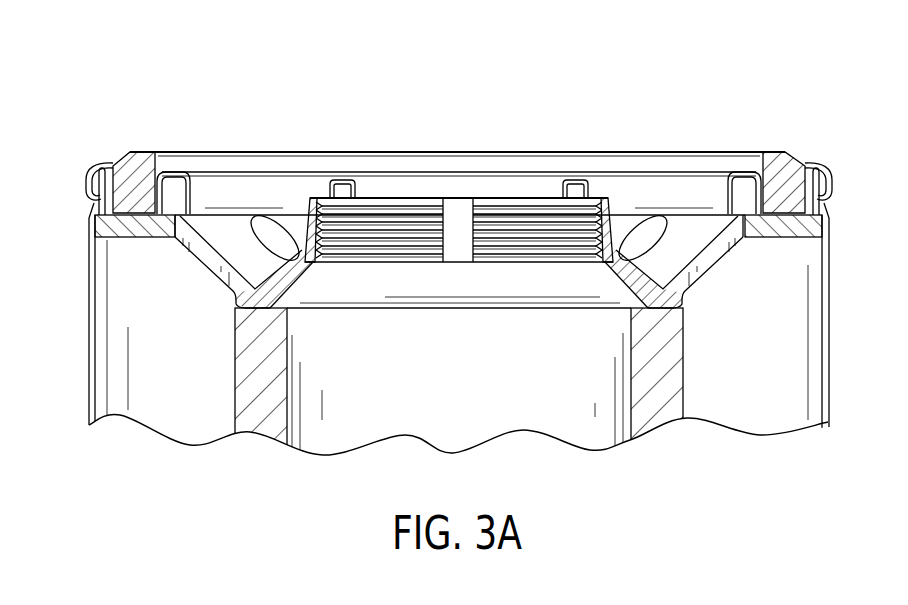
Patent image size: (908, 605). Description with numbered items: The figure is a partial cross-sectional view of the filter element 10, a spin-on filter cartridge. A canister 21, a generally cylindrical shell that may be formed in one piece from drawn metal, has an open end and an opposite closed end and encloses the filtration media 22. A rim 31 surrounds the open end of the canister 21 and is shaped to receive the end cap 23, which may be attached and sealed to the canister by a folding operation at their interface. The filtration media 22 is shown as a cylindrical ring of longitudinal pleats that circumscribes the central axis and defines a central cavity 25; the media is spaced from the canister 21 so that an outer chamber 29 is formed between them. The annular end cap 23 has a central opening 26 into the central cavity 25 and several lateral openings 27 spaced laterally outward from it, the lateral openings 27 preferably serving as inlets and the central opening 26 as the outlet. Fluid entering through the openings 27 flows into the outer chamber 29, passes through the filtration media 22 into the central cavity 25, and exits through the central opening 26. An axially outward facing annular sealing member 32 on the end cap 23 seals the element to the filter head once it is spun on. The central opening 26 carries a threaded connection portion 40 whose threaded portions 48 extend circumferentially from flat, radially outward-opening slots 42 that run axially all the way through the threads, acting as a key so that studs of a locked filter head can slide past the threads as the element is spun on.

The filter element 10 is at (88, 101).
The canister 21 is at (826, 274).
The filtration media 22 is at (661, 418).
The end cap 23 is at (694, 230).
The central cavity 25 is at (561, 427).
The central opening 26 is at (500, 196).
The lateral openings 27 is at (272, 233).
The outer chamber 29 is at (795, 357).
The rim 31 is at (832, 198).
The annular sealing member 32 is at (779, 155).
The threaded connection portion 40 is at (445, 221).
The axially-extending slot 42 is at (463, 253).
The threaded portions 48 is at (537, 240).